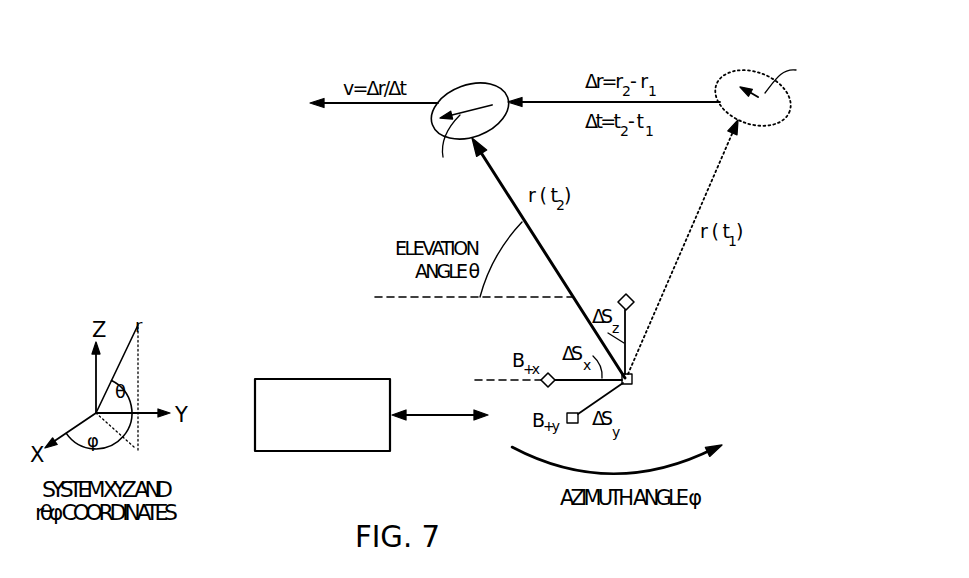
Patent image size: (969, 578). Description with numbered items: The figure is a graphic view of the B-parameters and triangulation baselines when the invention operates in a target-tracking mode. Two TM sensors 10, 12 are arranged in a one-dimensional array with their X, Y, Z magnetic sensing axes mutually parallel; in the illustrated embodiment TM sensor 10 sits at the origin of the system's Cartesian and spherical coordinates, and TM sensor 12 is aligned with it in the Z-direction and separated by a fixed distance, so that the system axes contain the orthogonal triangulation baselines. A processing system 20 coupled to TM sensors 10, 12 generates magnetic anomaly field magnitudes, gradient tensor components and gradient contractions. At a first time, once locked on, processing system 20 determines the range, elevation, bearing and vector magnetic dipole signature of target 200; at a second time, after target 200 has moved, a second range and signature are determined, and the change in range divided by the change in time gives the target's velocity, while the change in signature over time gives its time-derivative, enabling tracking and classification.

The target 200 is at (476, 83).
The processing system 20 is at (321, 379).
The TM sensor 12 is at (634, 301).
The TM sensor 10 is at (634, 384).